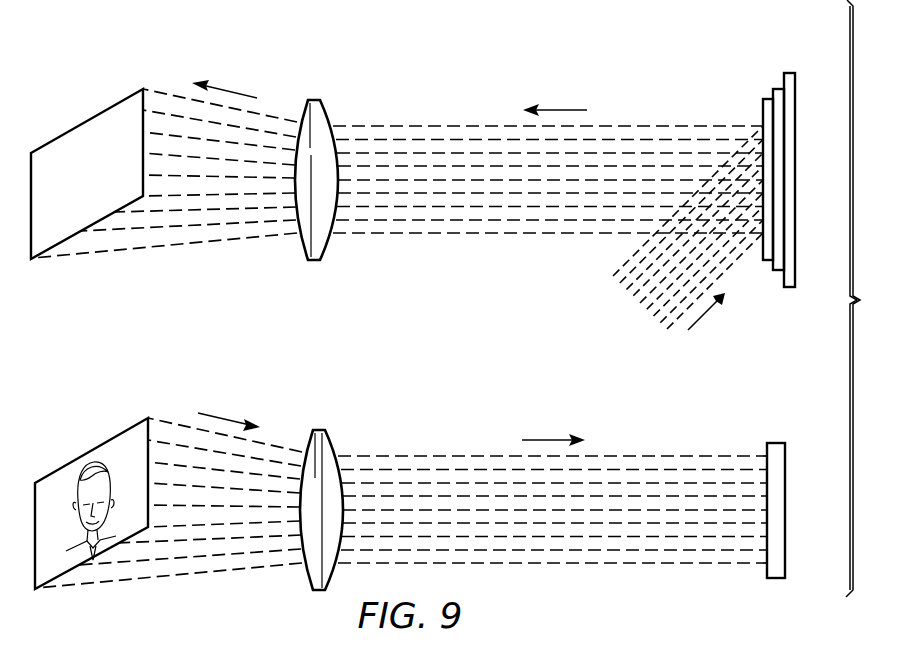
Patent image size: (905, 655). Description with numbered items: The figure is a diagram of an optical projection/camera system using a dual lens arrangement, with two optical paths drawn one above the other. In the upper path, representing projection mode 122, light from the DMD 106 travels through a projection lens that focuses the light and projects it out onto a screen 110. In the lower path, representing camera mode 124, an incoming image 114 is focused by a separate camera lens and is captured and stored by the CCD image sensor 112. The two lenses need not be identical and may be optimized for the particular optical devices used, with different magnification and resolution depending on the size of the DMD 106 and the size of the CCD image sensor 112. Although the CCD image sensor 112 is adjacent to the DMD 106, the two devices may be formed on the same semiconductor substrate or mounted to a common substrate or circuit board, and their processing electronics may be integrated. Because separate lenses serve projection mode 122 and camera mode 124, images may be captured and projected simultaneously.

The DMD 106 is at (790, 72).
The screen 110 is at (87, 120).
The CCD image sensor 112 is at (775, 443).
The incoming image 114 is at (90, 451).
The projection mode 122 is at (570, 48).
The camera mode 124 is at (543, 390).